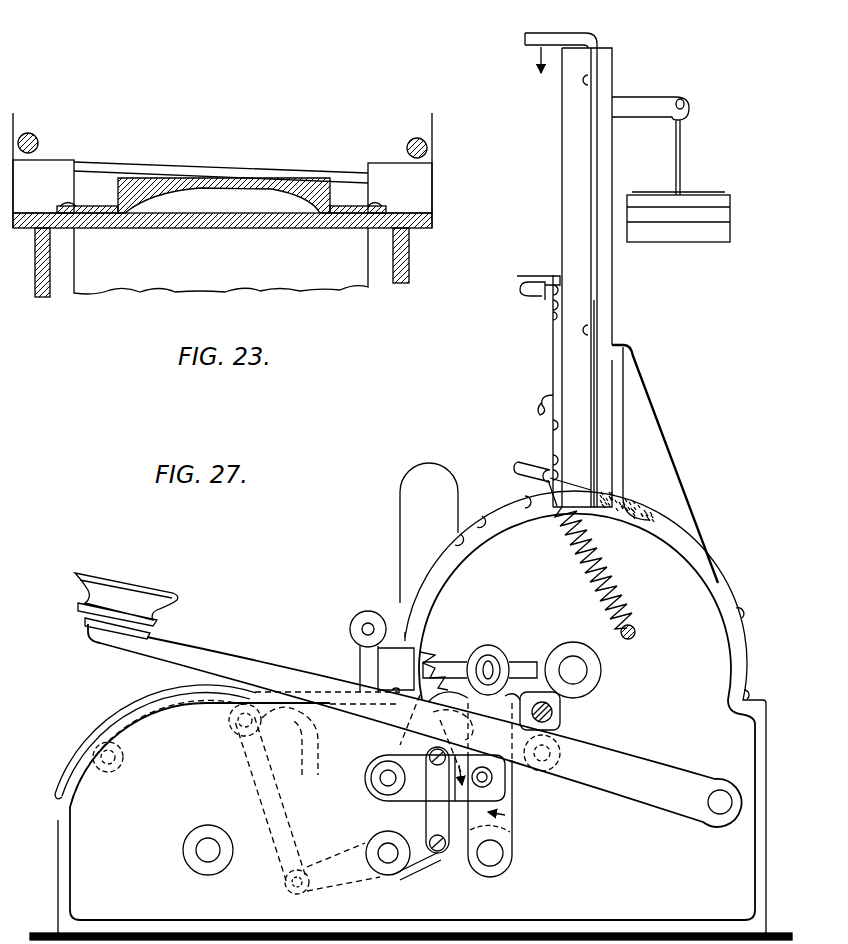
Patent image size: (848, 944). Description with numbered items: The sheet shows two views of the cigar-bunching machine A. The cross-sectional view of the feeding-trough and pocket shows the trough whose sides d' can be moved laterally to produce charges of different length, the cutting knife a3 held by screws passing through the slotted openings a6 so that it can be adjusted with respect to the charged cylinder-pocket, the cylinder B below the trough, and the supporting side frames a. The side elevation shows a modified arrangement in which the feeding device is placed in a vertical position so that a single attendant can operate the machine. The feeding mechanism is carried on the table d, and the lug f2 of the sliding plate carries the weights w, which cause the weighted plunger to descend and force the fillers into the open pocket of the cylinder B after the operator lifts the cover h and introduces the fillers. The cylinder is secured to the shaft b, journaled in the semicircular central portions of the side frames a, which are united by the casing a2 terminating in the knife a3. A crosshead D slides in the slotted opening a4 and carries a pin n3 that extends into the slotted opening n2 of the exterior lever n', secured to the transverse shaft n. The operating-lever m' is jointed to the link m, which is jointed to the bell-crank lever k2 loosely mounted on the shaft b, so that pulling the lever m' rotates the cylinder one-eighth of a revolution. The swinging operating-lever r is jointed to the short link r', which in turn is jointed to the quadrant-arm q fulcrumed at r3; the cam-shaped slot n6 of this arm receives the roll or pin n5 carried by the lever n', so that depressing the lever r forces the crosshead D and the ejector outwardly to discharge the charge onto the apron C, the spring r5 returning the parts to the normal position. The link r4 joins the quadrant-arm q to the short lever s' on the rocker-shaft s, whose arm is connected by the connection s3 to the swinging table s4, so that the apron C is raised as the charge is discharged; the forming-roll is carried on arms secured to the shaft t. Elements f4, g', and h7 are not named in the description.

In FIG. 23, the cutter or knife a3 is at (222, 168).
In FIG. 27, the cutter or knife a3 is at (508, 518).
In FIG. 23, the slotted openings a6 is at (412, 143).
In FIG. 23, the sides of the feeding-trough d' is at (221, 195).
In FIG. 27, the sides of the feeding-trough d' is at (615, 403).
In FIG. 23, the side frames a is at (409, 255).
In FIG. 27, the side frames a is at (506, 590).
In FIG. 23, the cylinder B is at (221, 261).
In FIG. 27, the table d is at (601, 277).
In FIG. 27, the cover h is at (557, 358).
In FIG. 27, the hook arm f4 is at (524, 40).
In FIG. 27, the lug f2 is at (643, 98).
In FIG. 27, the weights w is at (648, 196).
In FIG. 27, the hook g' is at (526, 285).
In FIG. 27, the sheet-metal casing or housing a2 is at (750, 650).
In FIG. 27, the machine A is at (304, 585).
In FIG. 27, the spring h7 is at (607, 586).
In FIG. 27, the operating-lever m' is at (409, 533).
In FIG. 27, the bell-crank lever k2 is at (394, 620).
In FIG. 27, the link m is at (367, 665).
In FIG. 27, the spring r5 is at (424, 672).
In FIG. 27, the slotted opening a4 is at (532, 668).
In FIG. 27, the crosshead D is at (459, 668).
In FIG. 27, the slotted opening n2 is at (494, 660).
In FIG. 27, the pin n3 is at (486, 660).
In FIG. 27, the shaft b is at (568, 665).
In FIG. 27, the operating-lever r is at (408, 700).
In FIG. 27, the apron C is at (100, 740).
In FIG. 27, the connection s3 is at (265, 785).
In FIG. 27, the apron or belt-supporting table s4 is at (367, 735).
In FIG. 27, the quadrant-arm q is at (410, 745).
In FIG. 27, the fulcrum r3 is at (371, 778).
In FIG. 27, the link r4 is at (428, 815).
In FIG. 27, the roll or pin n5 is at (493, 785).
In FIG. 27, the cam-shaped slot n6 is at (487, 772).
In FIG. 27, the exterior lever n' is at (512, 790).
In FIG. 27, the shaft n is at (505, 861).
In FIG. 27, the short link r' is at (561, 731).
In FIG. 27, the rocker-shaft s is at (378, 846).
In FIG. 27, the short lever s' is at (421, 871).
In FIG. 27, the shaft t is at (208, 850).